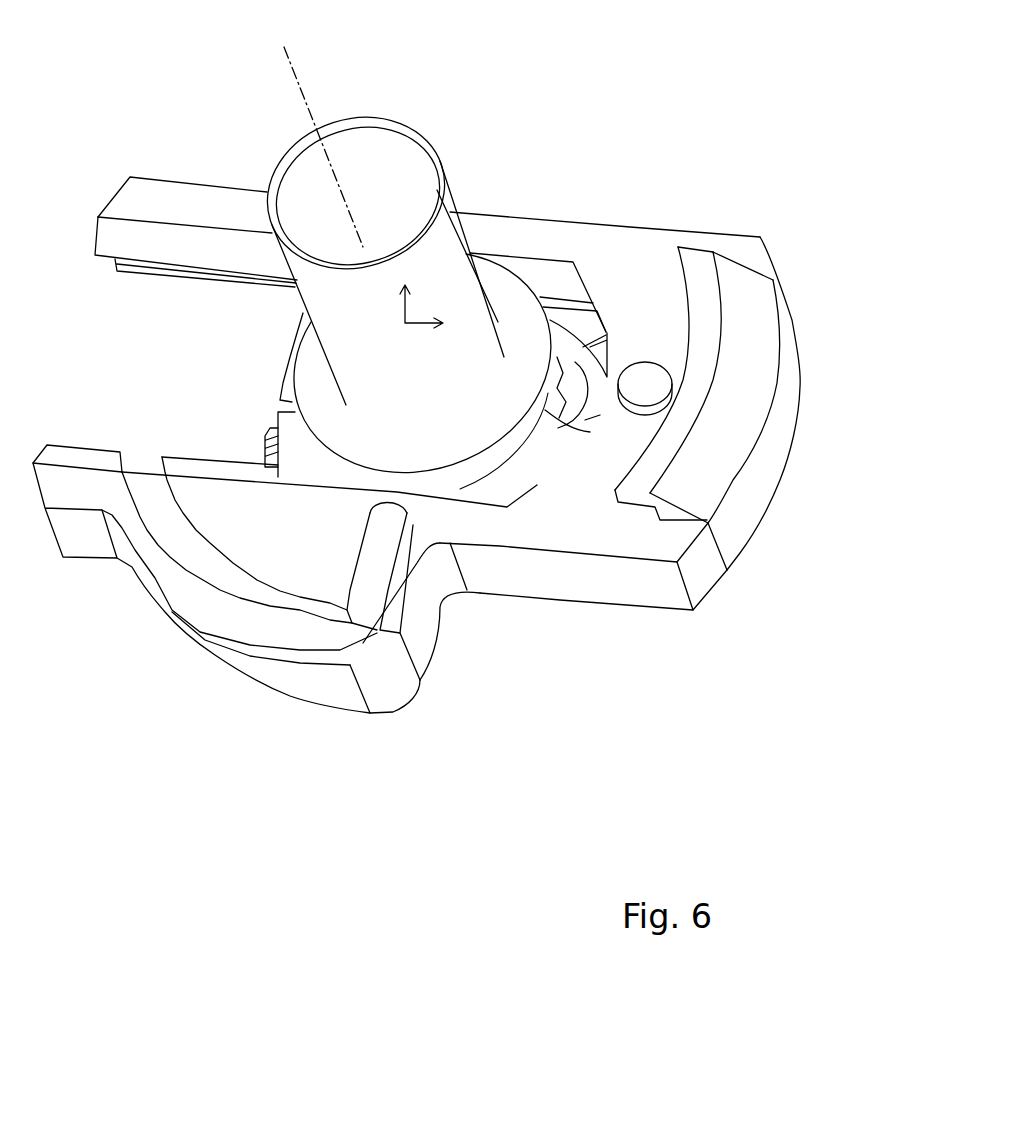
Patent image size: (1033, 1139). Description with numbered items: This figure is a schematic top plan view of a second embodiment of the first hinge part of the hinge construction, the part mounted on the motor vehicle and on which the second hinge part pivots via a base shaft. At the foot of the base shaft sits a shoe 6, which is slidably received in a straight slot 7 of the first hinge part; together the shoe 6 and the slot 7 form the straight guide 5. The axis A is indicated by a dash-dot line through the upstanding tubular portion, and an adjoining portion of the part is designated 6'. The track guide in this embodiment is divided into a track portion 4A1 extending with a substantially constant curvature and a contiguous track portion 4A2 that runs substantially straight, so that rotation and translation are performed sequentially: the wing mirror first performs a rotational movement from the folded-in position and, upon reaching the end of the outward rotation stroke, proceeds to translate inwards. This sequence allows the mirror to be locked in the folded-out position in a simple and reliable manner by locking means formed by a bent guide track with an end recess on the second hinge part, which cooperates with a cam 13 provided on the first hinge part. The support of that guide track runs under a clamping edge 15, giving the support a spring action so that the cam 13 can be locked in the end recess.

The axis A is at (295, 73).
The straight guide 5 is at (270, 260).
The straight slot 7 is at (217, 242).
The shoe 6 is at (329, 448).
The base plate portion 6' is at (581, 470).
The clamping edge 15 is at (633, 498).
The cam 13 is at (645, 374).
The track portion 4A1 is at (310, 623).
The track portion 4A2 is at (365, 603).